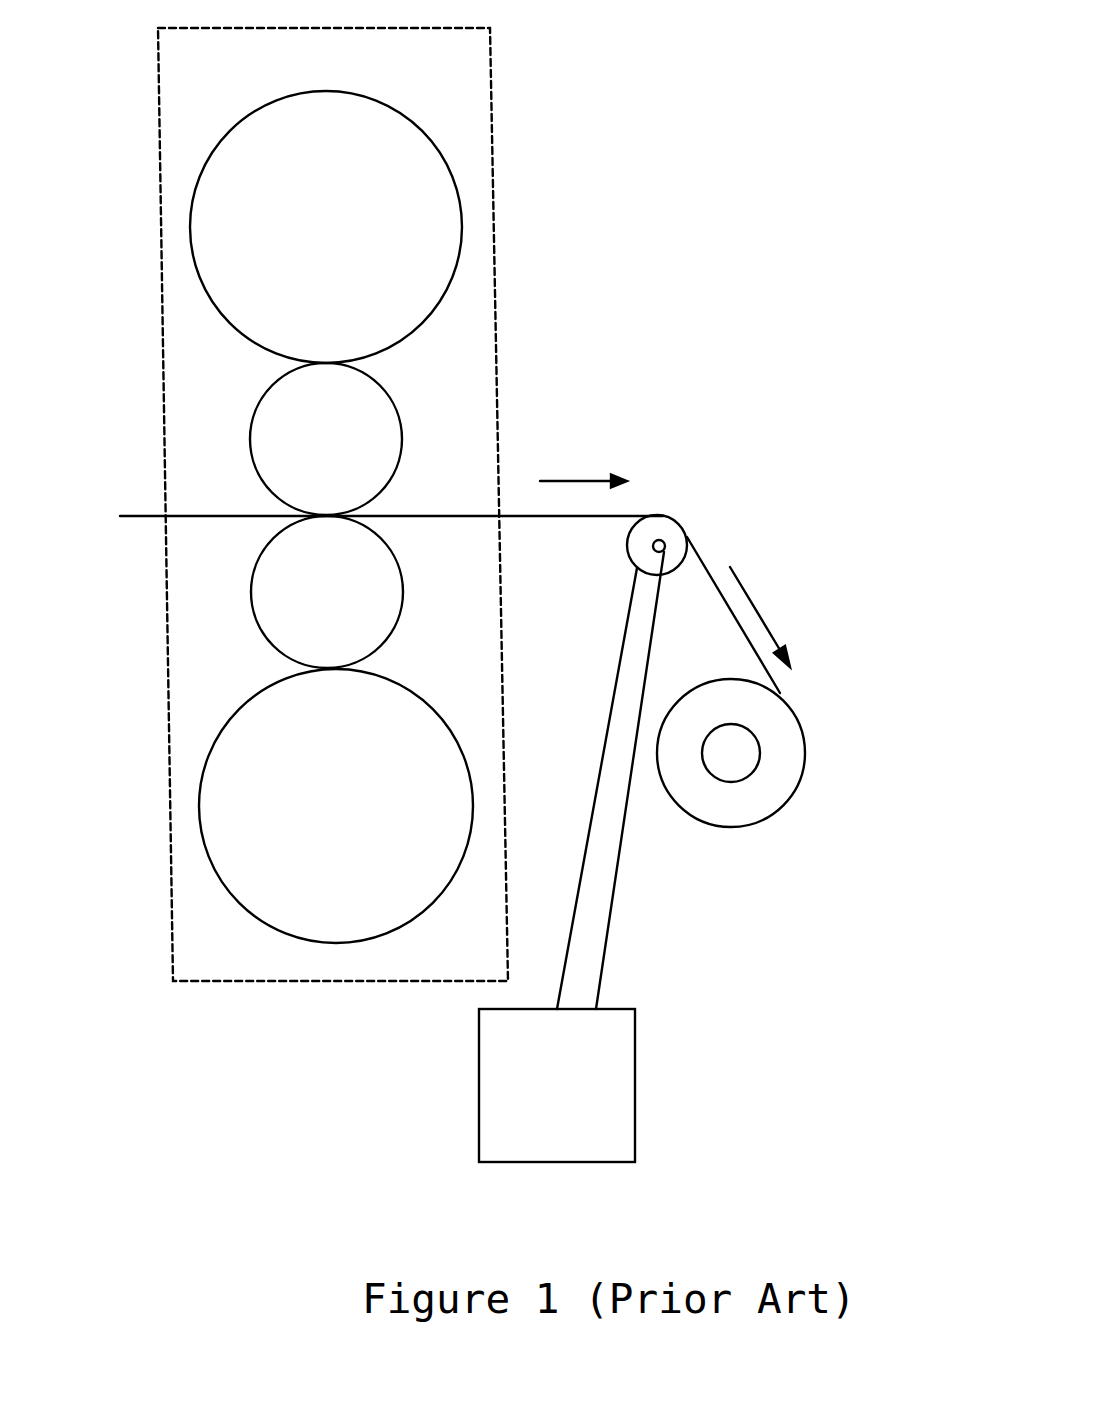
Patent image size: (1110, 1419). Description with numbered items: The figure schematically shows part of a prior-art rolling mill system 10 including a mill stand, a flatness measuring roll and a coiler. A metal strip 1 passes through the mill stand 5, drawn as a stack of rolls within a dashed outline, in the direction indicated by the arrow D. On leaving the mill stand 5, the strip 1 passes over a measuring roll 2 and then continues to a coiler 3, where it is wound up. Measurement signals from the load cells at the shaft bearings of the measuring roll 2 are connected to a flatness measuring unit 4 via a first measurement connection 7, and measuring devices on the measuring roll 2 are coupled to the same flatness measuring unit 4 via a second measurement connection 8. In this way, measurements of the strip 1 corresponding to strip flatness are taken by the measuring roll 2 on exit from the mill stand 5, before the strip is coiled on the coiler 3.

The rolling mill system 10 is at (610, 137).
The mill stand 5 is at (495, 307).
The metal strip 1 is at (450, 604).
The measuring roll 2 is at (672, 507).
The coiler 3 is at (733, 758).
The flatness measuring unit 4 is at (480, 1128).
The first measurement connection 7 is at (607, 947).
The second measurement connection 8 is at (582, 852).